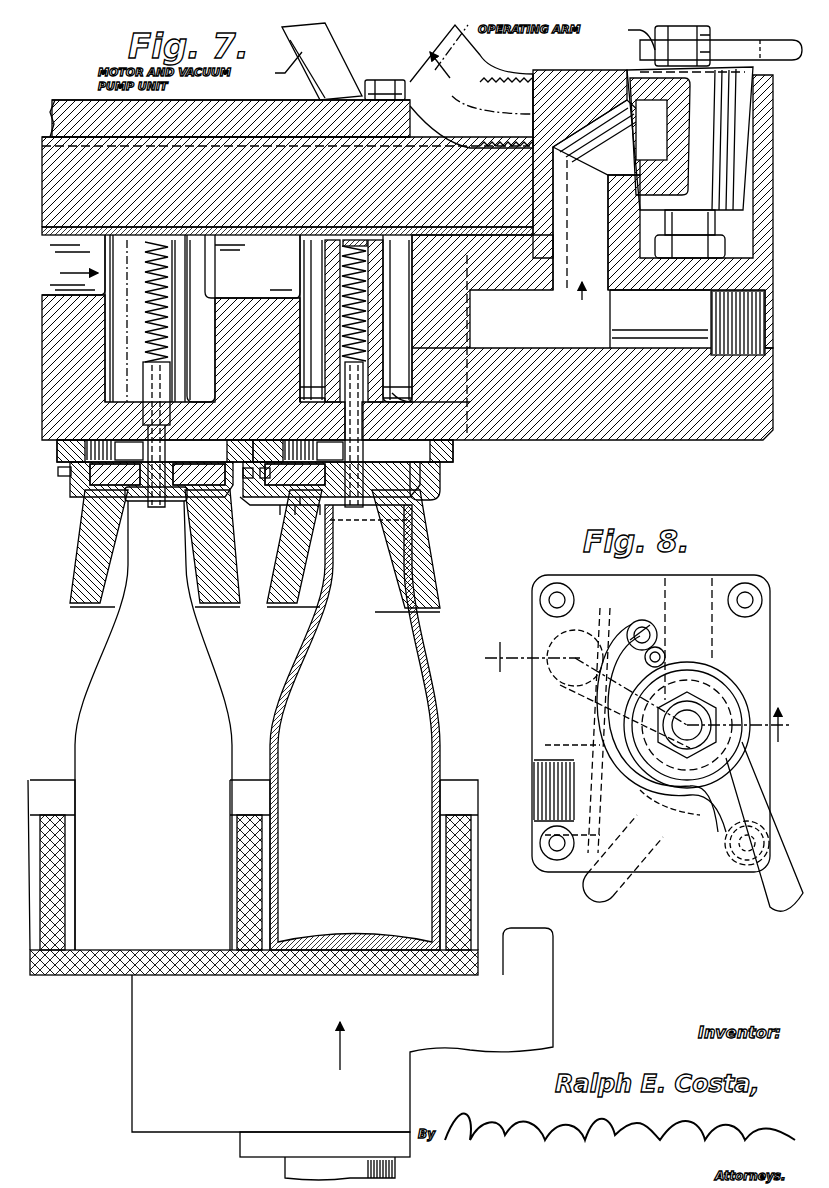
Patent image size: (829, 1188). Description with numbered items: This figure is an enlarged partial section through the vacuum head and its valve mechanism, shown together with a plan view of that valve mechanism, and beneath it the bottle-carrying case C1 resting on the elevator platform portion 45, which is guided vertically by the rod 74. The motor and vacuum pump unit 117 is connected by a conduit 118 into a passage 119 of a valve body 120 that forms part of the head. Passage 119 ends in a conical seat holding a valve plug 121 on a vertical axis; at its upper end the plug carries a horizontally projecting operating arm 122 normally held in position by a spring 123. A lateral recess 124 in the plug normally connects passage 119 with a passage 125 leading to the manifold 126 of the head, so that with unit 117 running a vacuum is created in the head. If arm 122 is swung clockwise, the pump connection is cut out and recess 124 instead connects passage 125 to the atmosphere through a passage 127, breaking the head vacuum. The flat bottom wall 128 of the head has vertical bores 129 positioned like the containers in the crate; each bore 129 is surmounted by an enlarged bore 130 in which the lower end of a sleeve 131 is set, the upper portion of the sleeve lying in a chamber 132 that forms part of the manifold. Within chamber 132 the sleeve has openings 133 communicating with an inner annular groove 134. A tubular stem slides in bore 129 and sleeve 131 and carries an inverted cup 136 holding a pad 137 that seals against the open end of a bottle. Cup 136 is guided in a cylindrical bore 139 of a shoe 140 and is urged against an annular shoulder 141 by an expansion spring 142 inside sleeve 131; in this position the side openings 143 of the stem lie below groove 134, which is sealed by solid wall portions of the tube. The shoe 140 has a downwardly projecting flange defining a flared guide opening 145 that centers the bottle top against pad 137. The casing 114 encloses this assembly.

In FIG. 7, the casing of motor and vacuum pump unit 114 is at (552, 448).
In FIG. 7, the motor and vacuum pump unit 117 is at (326, 44).
In FIG. 7, the conduit 118 is at (470, 64).
In FIG. 7, the passage 119 is at (585, 70).
In FIG. 8, the passage 119 is at (572, 758).
In FIG. 7, the valve body 120 is at (556, 78).
In FIG. 8, the valve body 120 is at (566, 582).
In FIG. 7, the valve plug 121 is at (642, 78).
In FIG. 8, the valve plug 121 is at (725, 692).
In FIG. 7, the operating arm 122 is at (802, 56).
In FIG. 8, the operating arm 122 is at (615, 890).
In FIG. 8, the spring 123 is at (646, 800).
In FIG. 7, the lateral recess 124 is at (595, 172).
In FIG. 8, the lateral recess 124 is at (640, 832).
In FIG. 7, the passage 125 is at (600, 245).
In FIG. 8, the passage 125 is at (605, 645).
In FIG. 7, the manifold 126 is at (207, 310).
In FIG. 8, the passage 127 is at (700, 590).
In FIG. 7, the flat bottom wall 128 is at (595, 425).
In FIG. 7, the vertical bore 129 is at (445, 468).
In FIG. 7, the enlarged bore 130 is at (392, 352).
In FIG. 7, the sleeve 131 is at (248, 262).
In FIG. 7, the chamber 132 is at (405, 272).
In FIG. 7, the openings 133 is at (300, 380).
In FIG. 7, the inner annular groove 134 is at (325, 396).
In FIG. 7, the inverted cup 136 is at (282, 512).
In FIG. 7, the pad 137 is at (420, 502).
In FIG. 7, the cylindrical bore 139 is at (455, 452).
In FIG. 7, the shoe 140 is at (273, 490).
In FIG. 7, the annular shoulder 141 is at (290, 530).
In FIG. 7, the expansion spring 142 is at (328, 270).
In FIG. 7, the side openings 143 is at (470, 402).
In FIG. 7, the downwardly flared guide opening 145 is at (416, 606).
In FIG. 7, the bottle case C1 is at (462, 897).
In FIG. 7, the platform portion 45 is at (135, 1048).
In FIG. 7, the vertical rod 74 is at (300, 1163).